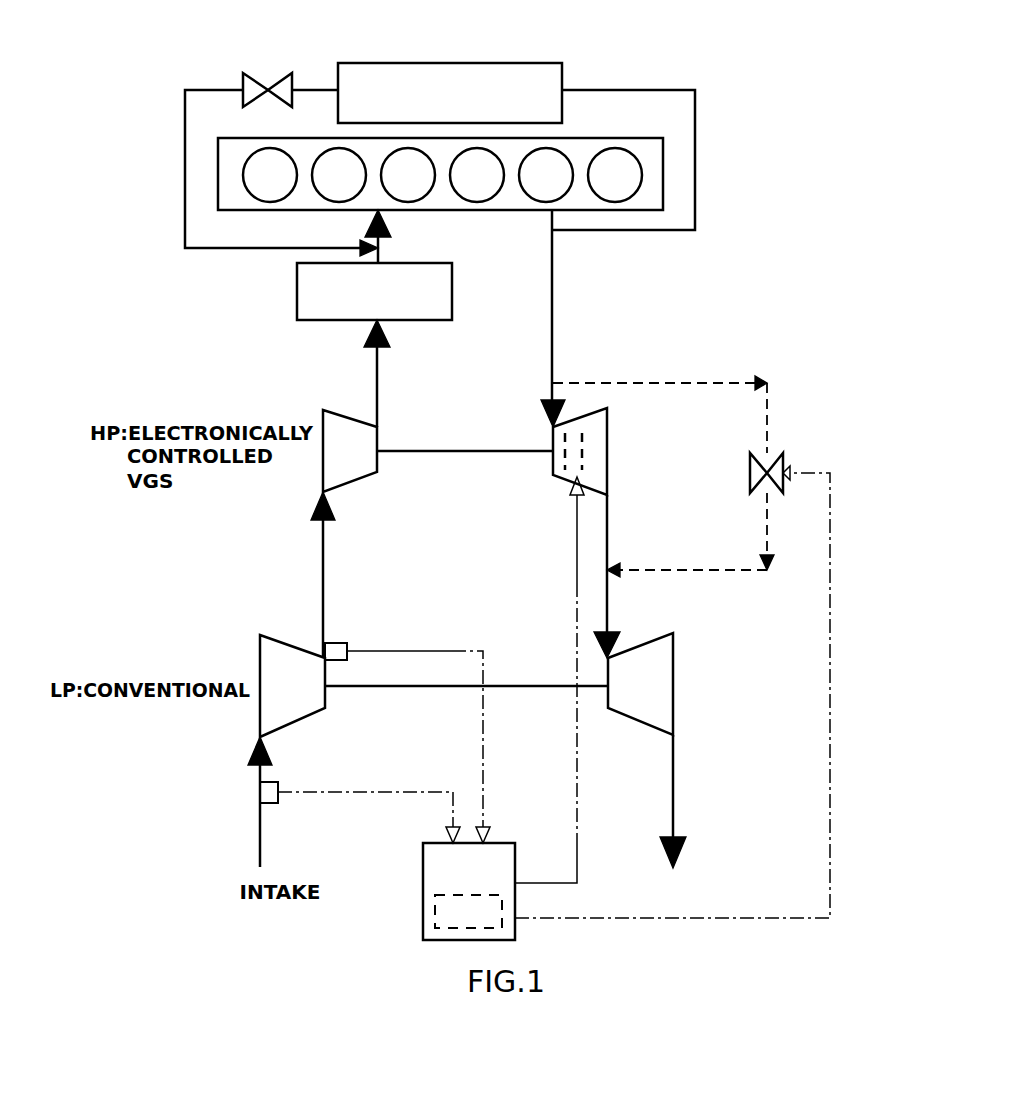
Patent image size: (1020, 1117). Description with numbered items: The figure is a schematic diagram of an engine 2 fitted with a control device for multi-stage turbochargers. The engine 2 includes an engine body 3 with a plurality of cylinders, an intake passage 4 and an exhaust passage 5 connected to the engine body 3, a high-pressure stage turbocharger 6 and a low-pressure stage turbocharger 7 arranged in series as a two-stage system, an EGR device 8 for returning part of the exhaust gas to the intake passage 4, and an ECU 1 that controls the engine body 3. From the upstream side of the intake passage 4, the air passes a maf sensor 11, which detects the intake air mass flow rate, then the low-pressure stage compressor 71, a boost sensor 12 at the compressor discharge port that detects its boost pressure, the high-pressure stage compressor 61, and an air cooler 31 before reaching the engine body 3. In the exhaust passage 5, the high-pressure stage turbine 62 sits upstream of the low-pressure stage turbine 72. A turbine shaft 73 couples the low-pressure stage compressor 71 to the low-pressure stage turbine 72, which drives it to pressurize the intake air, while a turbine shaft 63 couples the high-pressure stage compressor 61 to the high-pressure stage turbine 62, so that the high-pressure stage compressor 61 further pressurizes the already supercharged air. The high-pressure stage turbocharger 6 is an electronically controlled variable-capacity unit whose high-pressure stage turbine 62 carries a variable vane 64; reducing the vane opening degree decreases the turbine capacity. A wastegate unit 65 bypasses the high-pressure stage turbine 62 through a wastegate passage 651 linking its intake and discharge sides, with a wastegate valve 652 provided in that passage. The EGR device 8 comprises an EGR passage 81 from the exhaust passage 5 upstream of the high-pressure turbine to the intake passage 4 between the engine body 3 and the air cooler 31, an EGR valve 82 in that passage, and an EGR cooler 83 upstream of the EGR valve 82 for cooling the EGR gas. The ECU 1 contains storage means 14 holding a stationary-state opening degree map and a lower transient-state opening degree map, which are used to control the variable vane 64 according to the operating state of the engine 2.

The engine control unit (ECU) 1 is at (597, 703).
The engine 2 is at (540, 155).
The engine body 3 is at (570, 138).
The intake passage 4 is at (323, 565).
The exhaust passage 5 is at (607, 537).
The high-pressure stage turbocharger 6 is at (459, 437).
The low-pressure stage turbocharger 7 is at (424, 679).
The EGR device 8 is at (433, 134).
The maf sensor 11 is at (270, 803).
The boost sensor 12 is at (345, 645).
The storage means 14 is at (435, 918).
The air cooler 31 is at (297, 292).
The high-pressure stage compressor 61 is at (380, 464).
The high-pressure stage turbine 62 is at (553, 465).
The turbine shaft 63 is at (445, 451).
The variable vane 64 is at (585, 458).
The wastegate unit 65 is at (716, 456).
The low-pressure stage compressor 71 is at (330, 708).
The low-pressure stage turbine 72 is at (608, 700).
The turbine shaft 73 is at (425, 686).
The EGR passage 81 is at (595, 90).
The EGR valve 82 is at (272, 75).
The EGR cooler 83 is at (415, 63).
The wastegate passage 651 is at (690, 383).
The wastegate valve 652 is at (783, 455).